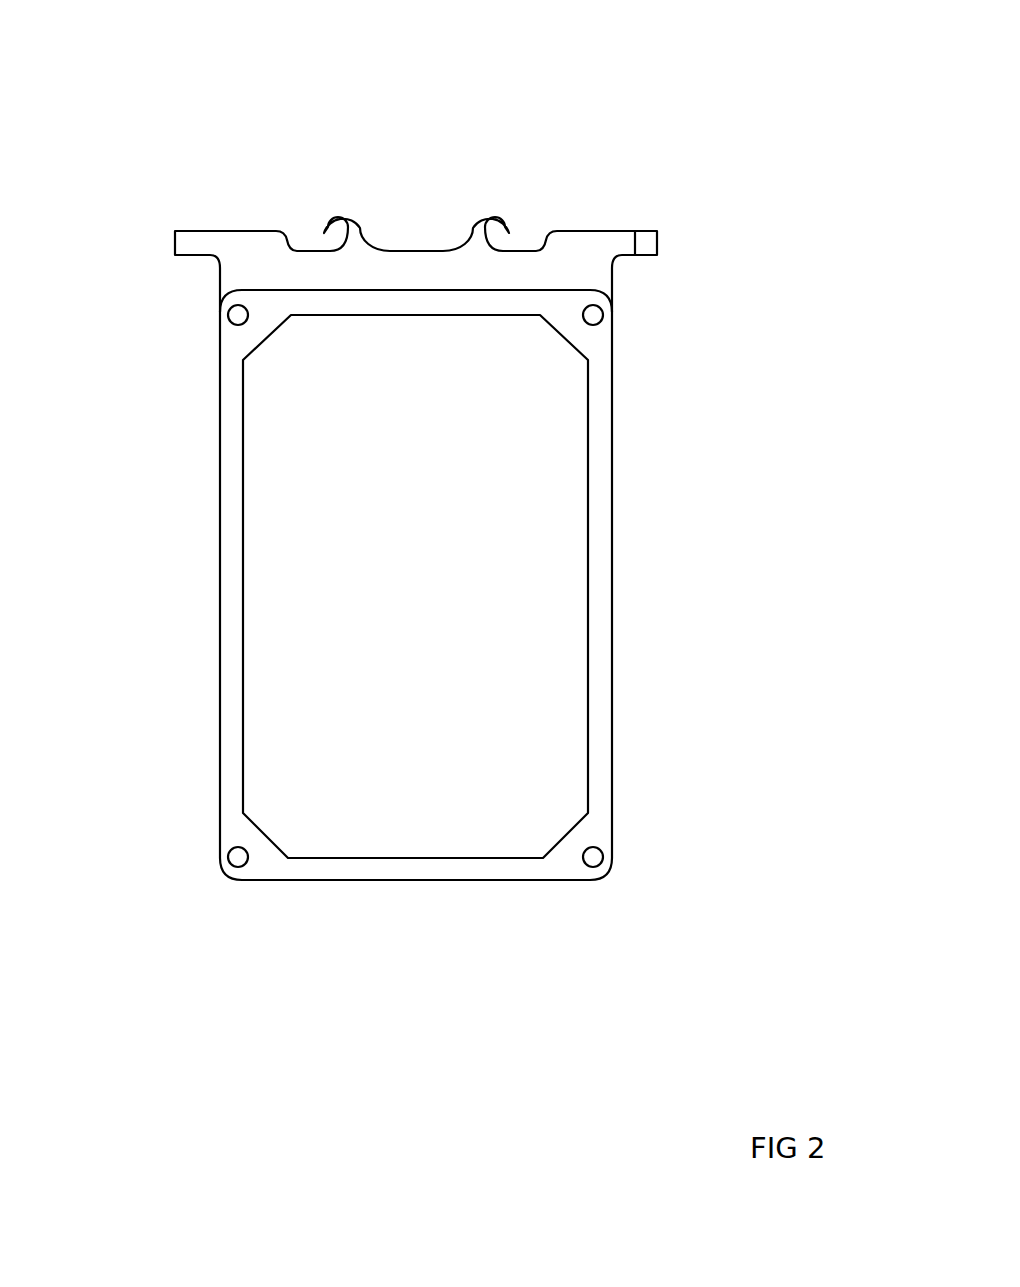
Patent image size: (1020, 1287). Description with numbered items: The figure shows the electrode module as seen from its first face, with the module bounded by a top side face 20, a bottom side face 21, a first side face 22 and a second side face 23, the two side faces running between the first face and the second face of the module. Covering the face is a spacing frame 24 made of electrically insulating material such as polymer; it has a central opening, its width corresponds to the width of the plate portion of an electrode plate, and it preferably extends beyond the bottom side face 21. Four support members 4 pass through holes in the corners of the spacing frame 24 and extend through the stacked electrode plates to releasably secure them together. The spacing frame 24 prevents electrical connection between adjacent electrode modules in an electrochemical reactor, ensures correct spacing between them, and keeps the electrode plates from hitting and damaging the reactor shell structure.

The top side face 20 is at (418, 248).
The bottom side face 21 is at (447, 886).
The first side face 22 is at (216, 438).
The second side face 23 is at (616, 450).
The spacing frame 24 is at (600, 352).
The support member 4 is at (228, 315).